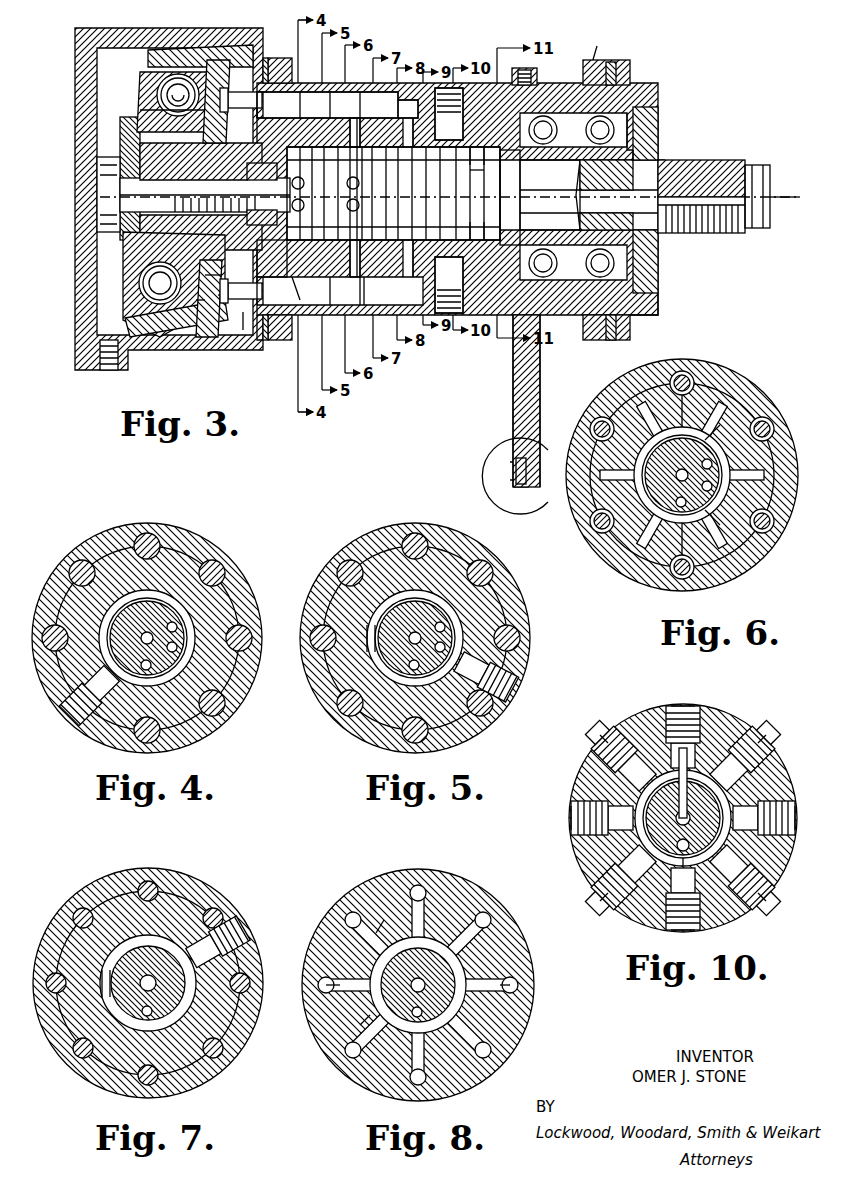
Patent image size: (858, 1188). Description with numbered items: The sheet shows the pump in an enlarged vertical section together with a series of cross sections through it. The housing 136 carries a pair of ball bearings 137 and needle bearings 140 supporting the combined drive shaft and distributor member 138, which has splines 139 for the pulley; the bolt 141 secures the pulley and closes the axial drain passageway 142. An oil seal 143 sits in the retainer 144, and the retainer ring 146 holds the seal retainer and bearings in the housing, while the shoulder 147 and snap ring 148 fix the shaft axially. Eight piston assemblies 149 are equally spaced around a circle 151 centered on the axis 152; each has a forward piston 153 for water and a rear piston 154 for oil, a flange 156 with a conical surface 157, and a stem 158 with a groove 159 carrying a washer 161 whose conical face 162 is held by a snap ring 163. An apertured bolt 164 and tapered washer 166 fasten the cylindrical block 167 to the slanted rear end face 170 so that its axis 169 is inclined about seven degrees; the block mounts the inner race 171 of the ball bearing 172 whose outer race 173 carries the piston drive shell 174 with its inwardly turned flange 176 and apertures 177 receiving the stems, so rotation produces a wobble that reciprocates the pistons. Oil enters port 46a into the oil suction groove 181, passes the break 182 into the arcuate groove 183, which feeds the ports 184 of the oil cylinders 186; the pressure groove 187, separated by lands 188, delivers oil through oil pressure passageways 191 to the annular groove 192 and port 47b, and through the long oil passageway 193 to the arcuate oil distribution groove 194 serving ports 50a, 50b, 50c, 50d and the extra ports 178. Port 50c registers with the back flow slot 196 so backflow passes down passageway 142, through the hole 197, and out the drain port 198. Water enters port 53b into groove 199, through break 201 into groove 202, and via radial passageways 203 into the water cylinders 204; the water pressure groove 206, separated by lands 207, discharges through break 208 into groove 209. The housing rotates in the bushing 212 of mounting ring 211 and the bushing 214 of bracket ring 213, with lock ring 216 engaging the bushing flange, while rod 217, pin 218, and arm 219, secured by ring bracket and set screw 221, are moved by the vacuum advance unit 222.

In FIG. 3, the housing 136 is at (599, 56).
In FIG. 3, the ball bearings 137 is at (568, 232).
In FIG. 3, the combined drive shaft and distributor member 138 is at (662, 160).
In FIG. 3, the splines 139 is at (715, 233).
In FIG. 3, the needle bearings 140 is at (285, 122).
In FIG. 3, the bolt 141 is at (770, 225).
In FIG. 3, the axial drain passageway 142 is at (450, 193).
In FIG. 4, the axial drain passageway 142 is at (142, 612).
In FIG. 5, the axial drain passageway 142 is at (415, 638).
In FIG. 7, the axial drain passageway 142 is at (148, 975).
In FIG. 8, the axial drain passageway 142 is at (418, 985).
In FIG. 10, the axial drain passageway 142 is at (648, 805).
In FIG. 3, the oil seal 143 is at (636, 155).
In FIG. 3, the retainer 144 is at (633, 140).
In FIG. 3, the retainer ring 146 is at (658, 110).
In FIG. 3, the shoulder 147 is at (536, 174).
In FIG. 3, the snap ring 148 is at (606, 195).
In FIG. 3, the piston assemblies 149 is at (243, 330).
In FIG. 4, the circle 151 is at (236, 571).
In FIG. 5, the circle 151 is at (503, 604).
In FIG. 6, the circle 151 is at (718, 389).
In FIG. 7, the circle 151 is at (218, 913).
In FIG. 8, the circle 151 is at (418, 985).
In FIG. 3, the axis 152 is at (780, 190).
In FIG. 3, the forward piston 153 is at (362, 305).
In FIG. 6, the forward piston 153 is at (682, 371).
In FIG. 7, the forward piston 153 is at (148, 881).
In FIG. 3, the rear piston 154 is at (308, 305).
In FIG. 4, the rear piston 154 is at (145, 533).
In FIG. 5, the rear piston 154 is at (410, 534).
In FIG. 3, the flange 156 is at (226, 310).
In FIG. 3, the conical surface 157 is at (212, 337).
In FIG. 3, the stem 158 is at (190, 330).
In FIG. 3, the groove 159 is at (160, 330).
In FIG. 3, the washer 161 is at (200, 320).
In FIG. 3, the conical face 162 is at (206, 325).
In FIG. 3, the snap ring 163 is at (224, 283).
In FIG. 3, the apertured bolt 164 is at (118, 205).
In FIG. 3, the tapered washer 166 is at (120, 130).
In FIG. 3, the cylindrical block 167 is at (201, 196).
In FIG. 3, the axis of the block 169 is at (100, 180).
In FIG. 3, the slanted rear end face 170 is at (215, 118).
In FIG. 3, the inner race 171 is at (138, 100).
In FIG. 3, the ball bearing 172 is at (148, 78).
In FIG. 3, the outer race 173 is at (172, 74).
In FIG. 3, the piston drive shell 174 is at (200, 50).
In FIG. 3, the inwardly turned flange 176 is at (280, 58).
In FIG. 3, the apertures 177 is at (240, 92).
In FIG. 10, the ports 178 is at (612, 730).
In FIG. 3, the oil suction groove 181 is at (327, 105).
In FIG. 5, the oil suction groove 181 is at (416, 592).
In FIG. 5, the break 182 is at (367, 640).
In FIG. 6, the arcuate groove 183 is at (636, 485).
In FIG. 3, the ports 184 is at (336, 92).
In FIG. 6, the ports 184 is at (660, 440).
In FIG. 3, the oil cylinders 186 is at (357, 92).
In FIG. 6, the oil cylinders 186 is at (692, 383).
In FIG. 3, the pressure groove 187 is at (357, 132).
In FIG. 6, the pressure groove 187 is at (722, 472).
In FIG. 6, the lands 188 is at (712, 471).
In FIG. 3, the oil pressure passageways 191 is at (325, 194).
In FIG. 4, the oil pressure passageways 191 is at (178, 637).
In FIG. 5, the oil pressure passageways 191 is at (446, 637).
In FIG. 6, the oil pressure passageways 191 is at (712, 464).
In FIG. 3, the annular groove 192 is at (276, 258).
In FIG. 4, the annular groove 192 is at (157, 591).
In FIG. 3, the long oil passageway 193 is at (540, 196).
In FIG. 4, the long oil passageway 193 is at (146, 670).
In FIG. 5, the long oil passageway 193 is at (414, 670).
In FIG. 6, the long oil passageway 193 is at (665, 487).
In FIG. 7, the long oil passageway 193 is at (147, 1016).
In FIG. 8, the long oil passageway 193 is at (413, 1022).
In FIG. 10, the long oil passageway 193 is at (678, 852).
In FIG. 10, the arcuate oil distribution groove 194 is at (700, 860).
In FIG. 10, the back flow slot 196 is at (687, 790).
In FIG. 3, the hole 197 is at (262, 180).
In FIG. 3, the drain port 198 is at (105, 370).
In FIG. 3, the groove 199 is at (364, 258).
In FIG. 7, the groove 199 is at (192, 1000).
In FIG. 7, the break 201 is at (102, 983).
In FIG. 8, the groove 202 is at (350, 1015).
In FIG. 3, the radial passageways 203 is at (405, 100).
In FIG. 8, the radial passageways 203 is at (412, 908).
In FIG. 3, the water cylinders 204 is at (410, 100).
In FIG. 8, the water cylinders 204 is at (336, 964).
In FIG. 3, the water pressure groove 206 is at (500, 222).
In FIG. 8, the water pressure groove 206 is at (440, 945).
In FIG. 3, the lands 207 is at (470, 165).
In FIG. 8, the lands 207 is at (438, 898).
In FIG. 3, the break 208 is at (480, 182).
In FIG. 8, the break 208 is at (485, 958).
In FIG. 3, the water pressure groove 209 is at (480, 210).
In FIG. 3, the mounting bracket or ring 211 is at (282, 340).
In FIG. 3, the bushing 212 is at (262, 340).
In FIG. 3, the bracket ring 213 is at (595, 340).
In FIG. 3, the bushing 214 is at (611, 340).
In FIG. 3, the lock ring 216 is at (650, 317).
In FIG. 3, the rod 217 is at (612, 62).
In FIG. 3, the pin 218 is at (516, 470).
In FIG. 3, the arm 219 is at (513, 400).
In FIG. 3, the ring bracket and set screw 221 is at (530, 68).
In FIG. 3, the vacuum advance unit 222 is at (490, 488).
In FIG. 5, the port 46a is at (515, 683).
In FIG. 4, the port 47b is at (96, 724).
In FIG. 3, the port 50a is at (520, 327).
In FIG. 10, the port 50a is at (690, 925).
In FIG. 10, the port 50b is at (790, 832).
In FIG. 3, the port 50c is at (464, 114).
In FIG. 10, the port 50c is at (690, 712).
In FIG. 10, the port 50d is at (575, 820).
In FIG. 7, the port 53b is at (238, 942).